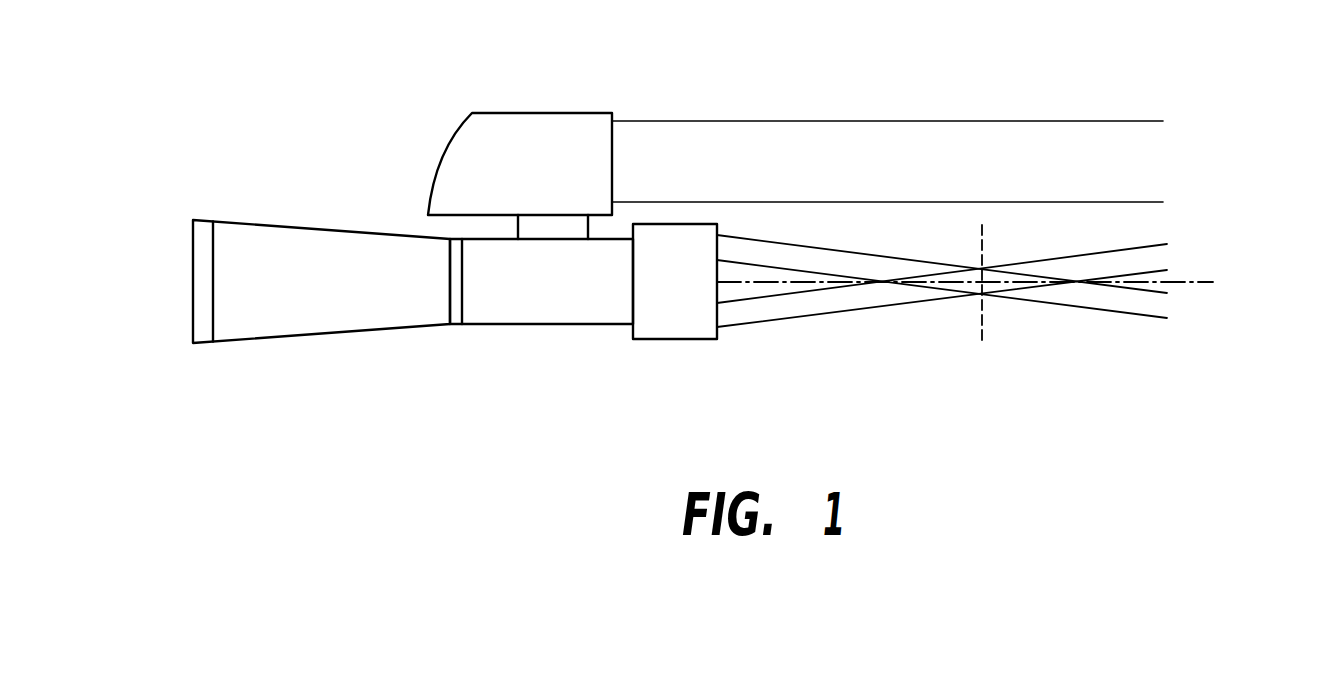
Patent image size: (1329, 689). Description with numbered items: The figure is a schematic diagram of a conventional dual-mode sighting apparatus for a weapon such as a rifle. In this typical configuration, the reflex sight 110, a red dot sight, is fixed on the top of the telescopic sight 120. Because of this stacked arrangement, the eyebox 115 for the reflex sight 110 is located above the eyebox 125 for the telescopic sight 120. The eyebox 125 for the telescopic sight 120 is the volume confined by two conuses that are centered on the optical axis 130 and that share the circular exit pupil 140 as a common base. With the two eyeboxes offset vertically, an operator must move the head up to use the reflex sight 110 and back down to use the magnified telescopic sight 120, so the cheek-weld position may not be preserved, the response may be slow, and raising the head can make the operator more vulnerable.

The reflex sight 110 is at (598, 112).
The eyebox 115 is at (1043, 121).
The telescopic sight 120 is at (325, 333).
The eyebox 125 is at (977, 283).
The optical axis 130 is at (1193, 281).
The exit pupil 140 is at (983, 327).